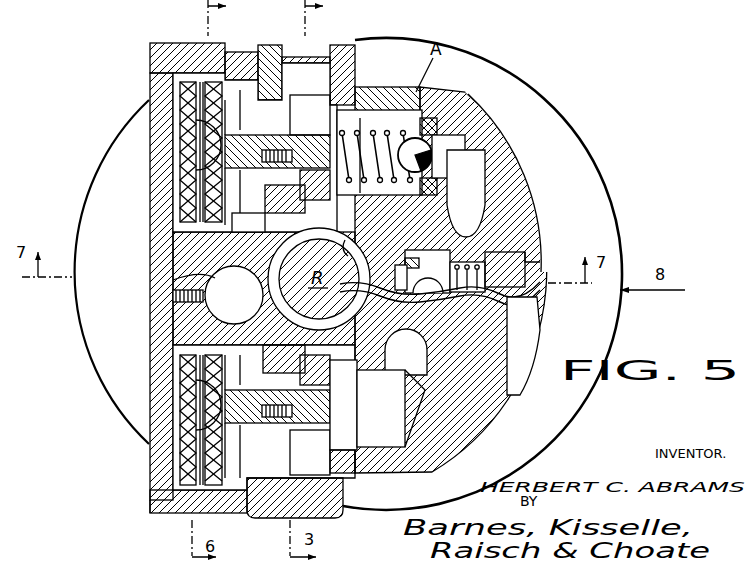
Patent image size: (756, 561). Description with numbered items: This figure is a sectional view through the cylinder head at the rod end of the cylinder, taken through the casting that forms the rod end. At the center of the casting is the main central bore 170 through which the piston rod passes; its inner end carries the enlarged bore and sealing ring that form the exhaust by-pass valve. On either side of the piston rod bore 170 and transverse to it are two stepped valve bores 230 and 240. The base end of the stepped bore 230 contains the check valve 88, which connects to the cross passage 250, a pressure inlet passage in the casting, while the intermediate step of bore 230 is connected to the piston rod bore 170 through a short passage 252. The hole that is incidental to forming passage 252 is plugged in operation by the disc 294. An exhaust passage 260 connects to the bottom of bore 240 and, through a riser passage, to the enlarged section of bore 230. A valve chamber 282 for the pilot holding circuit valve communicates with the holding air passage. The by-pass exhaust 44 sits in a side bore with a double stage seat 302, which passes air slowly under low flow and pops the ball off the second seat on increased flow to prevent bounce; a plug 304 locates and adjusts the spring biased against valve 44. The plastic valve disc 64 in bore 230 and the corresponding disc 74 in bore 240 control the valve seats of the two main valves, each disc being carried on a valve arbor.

The stepped valve bore 230 is at (243, 76).
The disc 294 is at (318, 58).
The valve disc 64 is at (305, 122).
The check valve 88 is at (421, 151).
The cross passage 250 is at (474, 180).
The short passage 252 is at (298, 222).
The valve chamber 282 is at (237, 267).
The main central bore 170 is at (349, 247).
The seat 302 is at (415, 262).
The by-pass exhaust 44 is at (420, 298).
The plug 304 is at (530, 288).
The exhaust passage 260 is at (422, 388).
The valve disc 74 is at (340, 467).
The stepped valve bore 240 is at (238, 482).